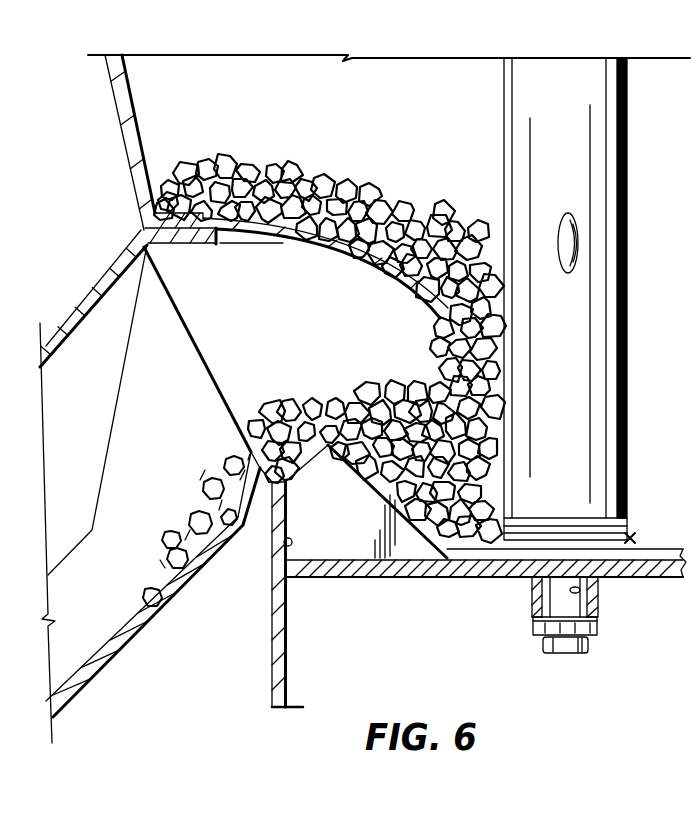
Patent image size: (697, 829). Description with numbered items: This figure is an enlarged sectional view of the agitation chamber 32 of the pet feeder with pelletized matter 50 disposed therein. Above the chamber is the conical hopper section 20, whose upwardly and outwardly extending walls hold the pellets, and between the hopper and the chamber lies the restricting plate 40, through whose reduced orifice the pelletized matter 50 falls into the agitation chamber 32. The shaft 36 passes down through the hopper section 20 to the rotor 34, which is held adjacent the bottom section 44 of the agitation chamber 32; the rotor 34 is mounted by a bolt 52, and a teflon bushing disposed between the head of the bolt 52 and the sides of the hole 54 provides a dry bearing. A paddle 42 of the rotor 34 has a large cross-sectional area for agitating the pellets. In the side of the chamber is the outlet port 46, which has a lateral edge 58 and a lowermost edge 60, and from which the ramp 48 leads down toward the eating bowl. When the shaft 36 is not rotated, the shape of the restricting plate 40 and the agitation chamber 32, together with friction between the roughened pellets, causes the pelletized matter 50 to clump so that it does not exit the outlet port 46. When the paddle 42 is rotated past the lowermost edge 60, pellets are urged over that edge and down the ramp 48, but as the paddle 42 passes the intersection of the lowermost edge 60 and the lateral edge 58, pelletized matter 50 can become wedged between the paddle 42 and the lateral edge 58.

The hopper section 20 is at (113, 125).
The shaft 36 is at (521, 107).
The pelletized matter 50 is at (404, 222).
The restricting plate 40 is at (288, 269).
The lateral edge 58 is at (197, 339).
The agitation chamber 32 is at (366, 343).
The outlet port 46 is at (201, 389).
The lowermost edge 60 is at (247, 440).
The paddle 42 is at (361, 535).
The bottom section 44 is at (271, 550).
The ramp 48 is at (160, 598).
The rotor 34 is at (637, 532).
The hole 54 is at (599, 606).
The bolt 52 is at (568, 656).